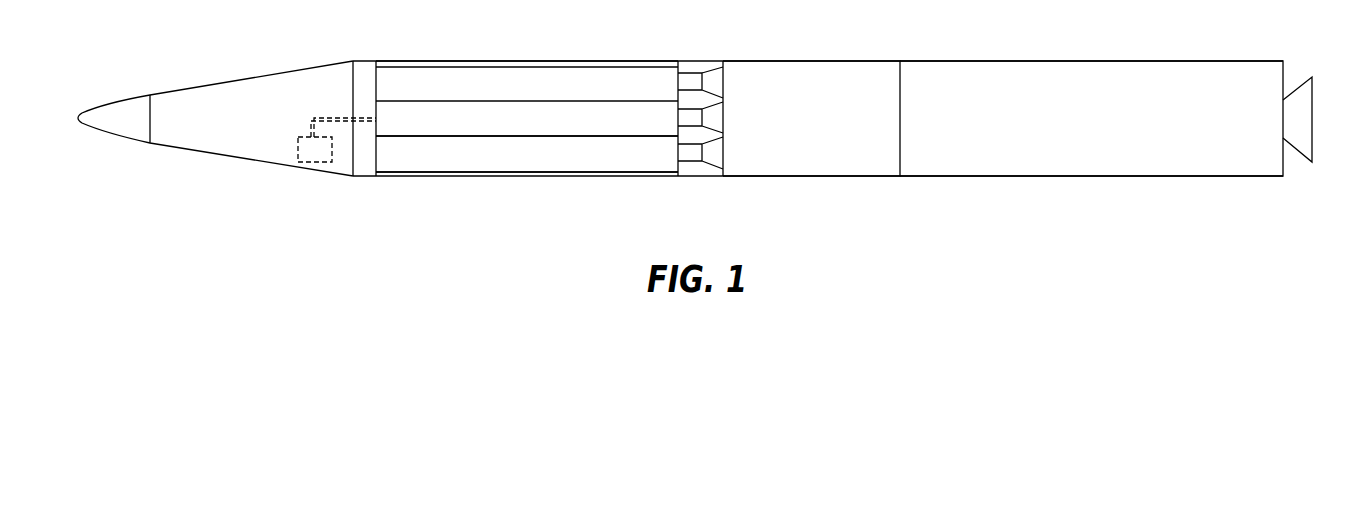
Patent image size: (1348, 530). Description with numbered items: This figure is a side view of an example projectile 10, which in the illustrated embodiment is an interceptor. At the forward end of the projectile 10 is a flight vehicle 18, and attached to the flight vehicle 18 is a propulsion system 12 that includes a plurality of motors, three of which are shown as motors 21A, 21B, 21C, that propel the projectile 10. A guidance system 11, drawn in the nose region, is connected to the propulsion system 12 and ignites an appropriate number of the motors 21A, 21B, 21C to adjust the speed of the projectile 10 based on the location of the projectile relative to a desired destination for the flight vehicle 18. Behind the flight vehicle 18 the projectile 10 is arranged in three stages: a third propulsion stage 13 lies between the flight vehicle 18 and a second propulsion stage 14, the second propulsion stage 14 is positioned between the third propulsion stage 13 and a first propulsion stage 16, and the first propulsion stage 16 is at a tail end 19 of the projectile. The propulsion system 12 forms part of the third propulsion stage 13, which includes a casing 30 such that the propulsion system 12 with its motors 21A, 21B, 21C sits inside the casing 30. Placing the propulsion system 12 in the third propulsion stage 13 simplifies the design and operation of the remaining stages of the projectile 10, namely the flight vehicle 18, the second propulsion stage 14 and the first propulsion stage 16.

The projectile 10 is at (201, 53).
The flight vehicle 18 is at (205, 145).
The guidance system 11 is at (313, 157).
The propulsion system 12 is at (462, 162).
The third propulsion stage 13 is at (625, 58).
The casing 30 is at (540, 57).
The motor 21A is at (462, 77).
The motor 21B is at (563, 123).
The motor 21C is at (645, 160).
The second propulsion stage 14 is at (813, 59).
The first propulsion stage 16 is at (1085, 59).
The tail end 19 is at (1313, 103).